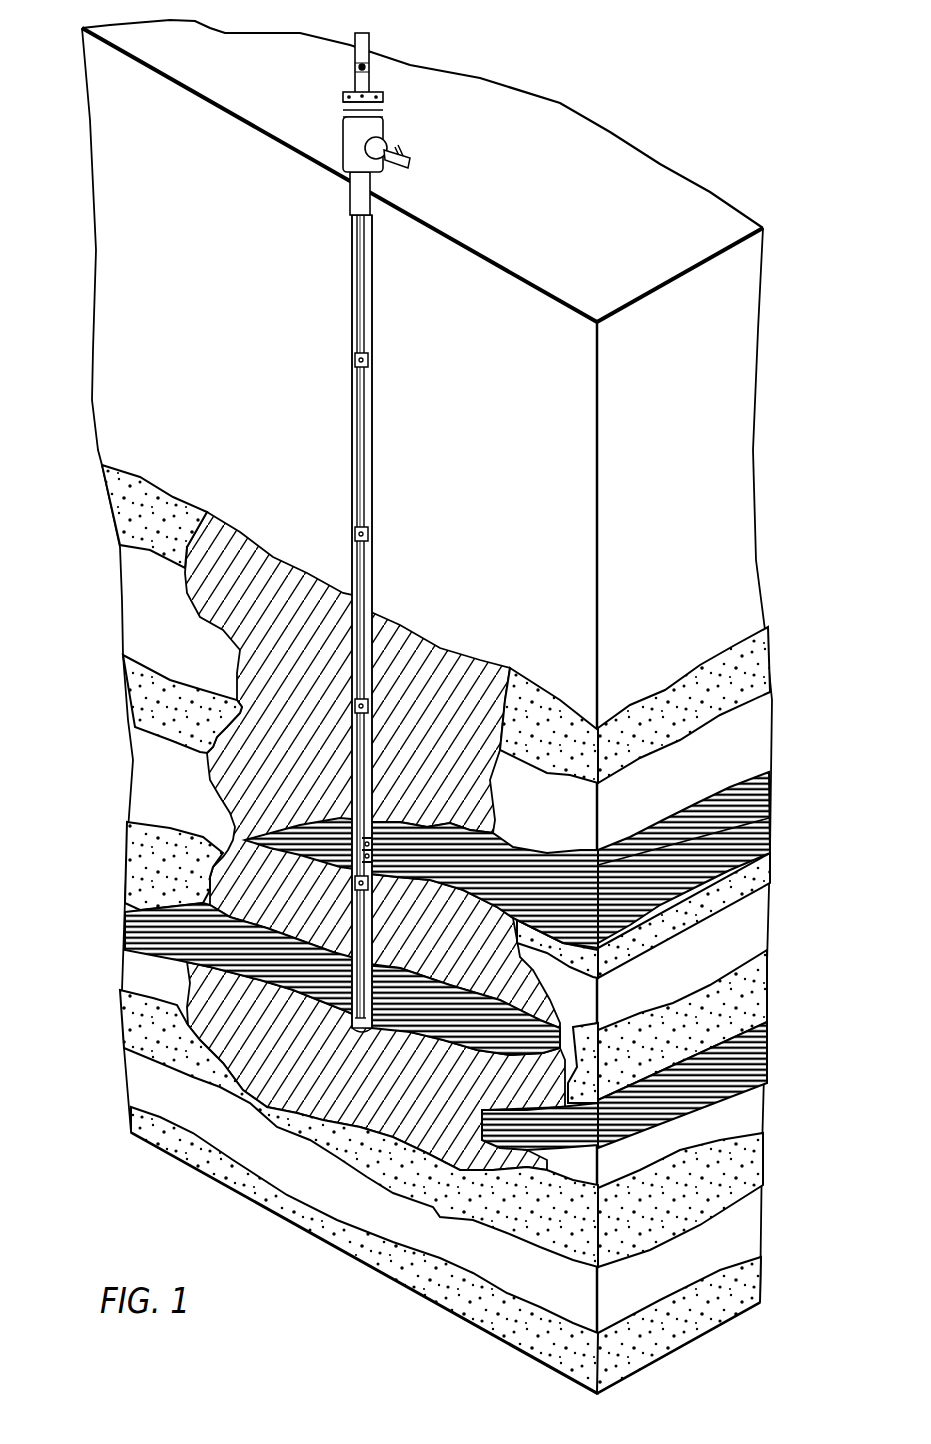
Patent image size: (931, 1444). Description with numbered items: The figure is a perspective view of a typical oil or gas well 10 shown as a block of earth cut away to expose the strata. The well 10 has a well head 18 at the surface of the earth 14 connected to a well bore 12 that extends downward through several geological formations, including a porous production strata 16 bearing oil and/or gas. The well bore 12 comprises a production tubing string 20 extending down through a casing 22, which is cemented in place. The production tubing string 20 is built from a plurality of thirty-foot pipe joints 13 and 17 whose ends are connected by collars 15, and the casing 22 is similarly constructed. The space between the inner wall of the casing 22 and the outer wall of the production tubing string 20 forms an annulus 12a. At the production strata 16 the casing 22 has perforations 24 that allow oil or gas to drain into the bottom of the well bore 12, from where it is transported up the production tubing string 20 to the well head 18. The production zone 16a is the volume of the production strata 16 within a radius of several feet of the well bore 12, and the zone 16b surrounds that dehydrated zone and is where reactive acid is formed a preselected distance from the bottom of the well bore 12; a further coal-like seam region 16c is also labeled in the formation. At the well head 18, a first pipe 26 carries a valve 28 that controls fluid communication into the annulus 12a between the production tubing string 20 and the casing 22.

The oil or gas well 10 is at (373, 532).
The well bore 12 is at (396, 621).
The annulus 12a is at (372, 398).
The pipe joint 13 is at (358, 462).
The surface of the earth 14 is at (612, 168).
The collar 15 is at (356, 360).
The production strata 16 is at (135, 913).
The production zone 16a is at (345, 832).
The zone 16b is at (605, 848).
The coal seam 16c is at (770, 818).
The pipe joint 17 is at (366, 232).
The well head 18 is at (376, 107).
The production tubing string 20 is at (366, 490).
The casing 22 is at (352, 196).
The perforations 24 is at (372, 830).
The first pipe 26 is at (410, 163).
The valve 28 is at (400, 152).